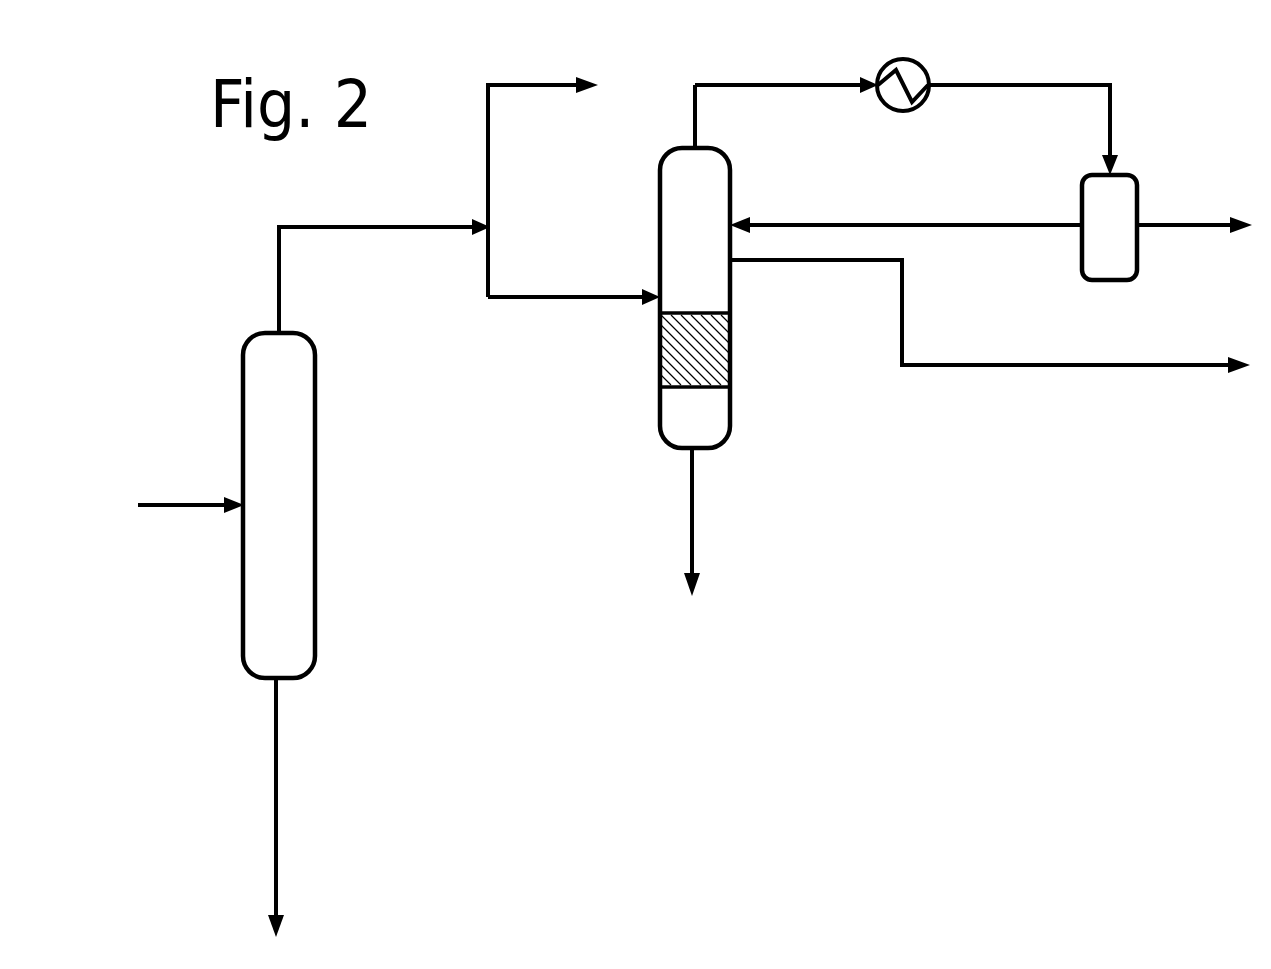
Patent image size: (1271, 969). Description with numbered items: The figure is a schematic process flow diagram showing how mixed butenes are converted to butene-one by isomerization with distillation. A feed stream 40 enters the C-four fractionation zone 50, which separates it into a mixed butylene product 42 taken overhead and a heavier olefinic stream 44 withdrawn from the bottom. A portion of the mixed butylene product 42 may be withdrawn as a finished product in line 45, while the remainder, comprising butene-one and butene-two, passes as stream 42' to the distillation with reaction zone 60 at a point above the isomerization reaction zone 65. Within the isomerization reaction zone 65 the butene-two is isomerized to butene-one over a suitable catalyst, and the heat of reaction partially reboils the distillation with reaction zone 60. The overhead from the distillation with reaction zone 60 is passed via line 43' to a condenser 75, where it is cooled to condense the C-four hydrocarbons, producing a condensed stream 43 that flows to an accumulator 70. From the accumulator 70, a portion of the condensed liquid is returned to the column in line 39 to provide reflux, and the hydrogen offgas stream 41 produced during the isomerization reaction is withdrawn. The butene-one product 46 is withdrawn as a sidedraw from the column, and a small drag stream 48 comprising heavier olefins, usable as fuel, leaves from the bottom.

The reflux line 39 is at (935, 222).
The feed stream 40 is at (214, 502).
The hydrogen offgas stream 41 is at (1175, 222).
The mixed butylene product 42 is at (384, 256).
The overhead stream portion 42' is at (560, 332).
The condensed stream 43 is at (1023, 130).
The overhead line 43' is at (786, 106).
The heavier olefinic stream 44 is at (280, 717).
The finished product line 45 is at (487, 83).
The 1-butene product 46 is at (1077, 362).
The drag stream 48 is at (695, 537).
The C4 fractionation zone 50 is at (315, 501).
The distillation with reaction zone 60 is at (652, 219).
The isomerization reaction zone 65 is at (712, 348).
The accumulator 70 is at (1137, 178).
The condenser 75 is at (921, 65).